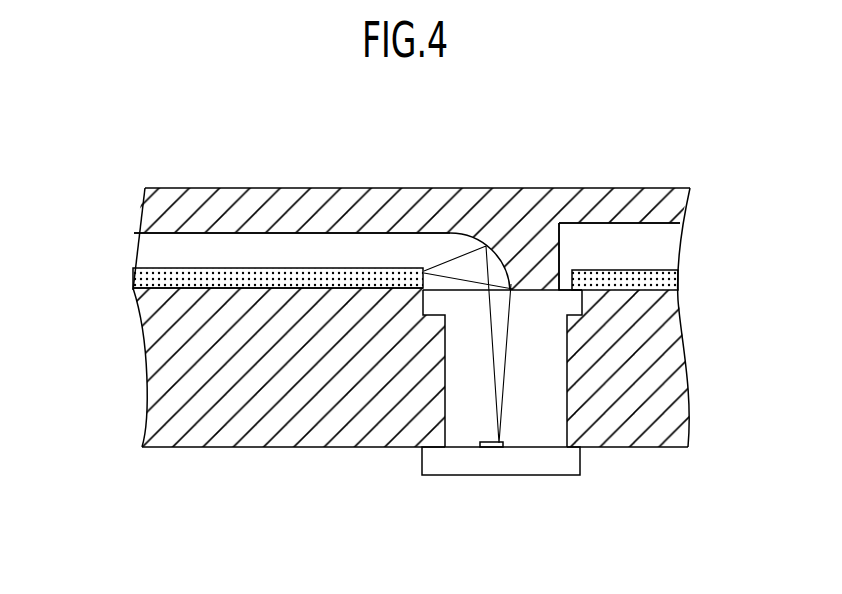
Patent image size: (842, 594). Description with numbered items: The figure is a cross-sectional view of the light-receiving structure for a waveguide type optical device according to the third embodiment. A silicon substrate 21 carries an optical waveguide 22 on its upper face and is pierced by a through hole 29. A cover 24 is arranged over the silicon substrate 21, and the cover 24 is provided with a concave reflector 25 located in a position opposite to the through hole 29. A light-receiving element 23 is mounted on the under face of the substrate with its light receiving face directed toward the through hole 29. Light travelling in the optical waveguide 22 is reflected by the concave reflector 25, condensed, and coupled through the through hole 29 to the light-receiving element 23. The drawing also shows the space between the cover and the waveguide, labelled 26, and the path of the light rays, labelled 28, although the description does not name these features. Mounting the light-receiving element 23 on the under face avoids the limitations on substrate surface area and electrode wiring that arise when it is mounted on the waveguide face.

The silicon substrate 21 is at (222, 447).
The optical waveguide 22 is at (132, 272).
The light-receiving element 23 is at (452, 478).
The cover 24 is at (267, 189).
The concave reflector 25 is at (487, 189).
The air gap 26 is at (162, 247).
The light path 28 is at (424, 271).
The through hole 29 is at (553, 370).